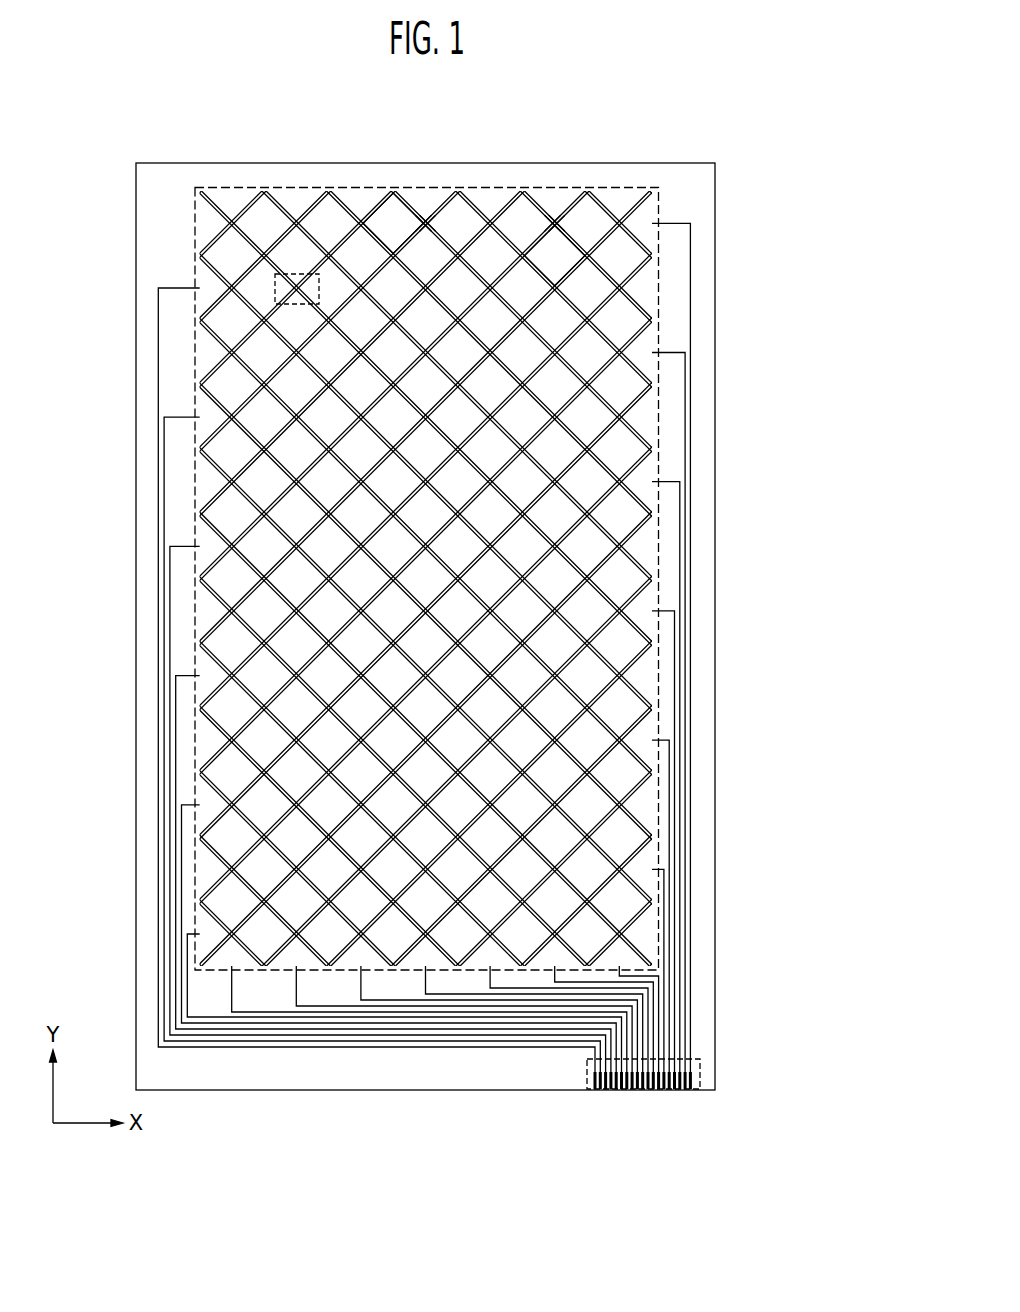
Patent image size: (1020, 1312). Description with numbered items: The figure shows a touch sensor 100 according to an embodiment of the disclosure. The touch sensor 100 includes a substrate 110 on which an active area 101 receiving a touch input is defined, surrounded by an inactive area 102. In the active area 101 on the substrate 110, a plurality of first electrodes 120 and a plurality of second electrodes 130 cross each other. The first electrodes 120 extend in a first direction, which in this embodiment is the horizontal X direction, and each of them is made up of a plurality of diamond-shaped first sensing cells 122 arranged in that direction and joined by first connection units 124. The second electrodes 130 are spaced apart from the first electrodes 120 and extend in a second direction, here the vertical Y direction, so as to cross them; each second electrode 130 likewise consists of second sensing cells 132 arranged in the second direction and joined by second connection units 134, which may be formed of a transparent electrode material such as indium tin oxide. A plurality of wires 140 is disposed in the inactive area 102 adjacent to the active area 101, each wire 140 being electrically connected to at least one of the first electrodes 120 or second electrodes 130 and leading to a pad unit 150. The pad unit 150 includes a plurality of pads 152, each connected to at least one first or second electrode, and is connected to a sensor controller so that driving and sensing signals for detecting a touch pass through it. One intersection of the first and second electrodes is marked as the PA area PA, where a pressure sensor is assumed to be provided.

The touch sensor 100 is at (736, 100).
The substrate 110 is at (715, 170).
The active area 101 is at (659, 206).
The inactive area 102 is at (697, 260).
The first electrodes 120 is at (463, 118).
The first sensing cells 122 is at (392, 215).
The first connection units 124 is at (423, 223).
The second electrodes 130 is at (610, 118).
The second sensing cells 132 is at (547, 250).
The second connection units 134 is at (558, 223).
The wires 140 is at (690, 285).
The pad unit 150 is at (587, 1073).
The pads 152 is at (610, 1090).
The PA area PA is at (280, 290).